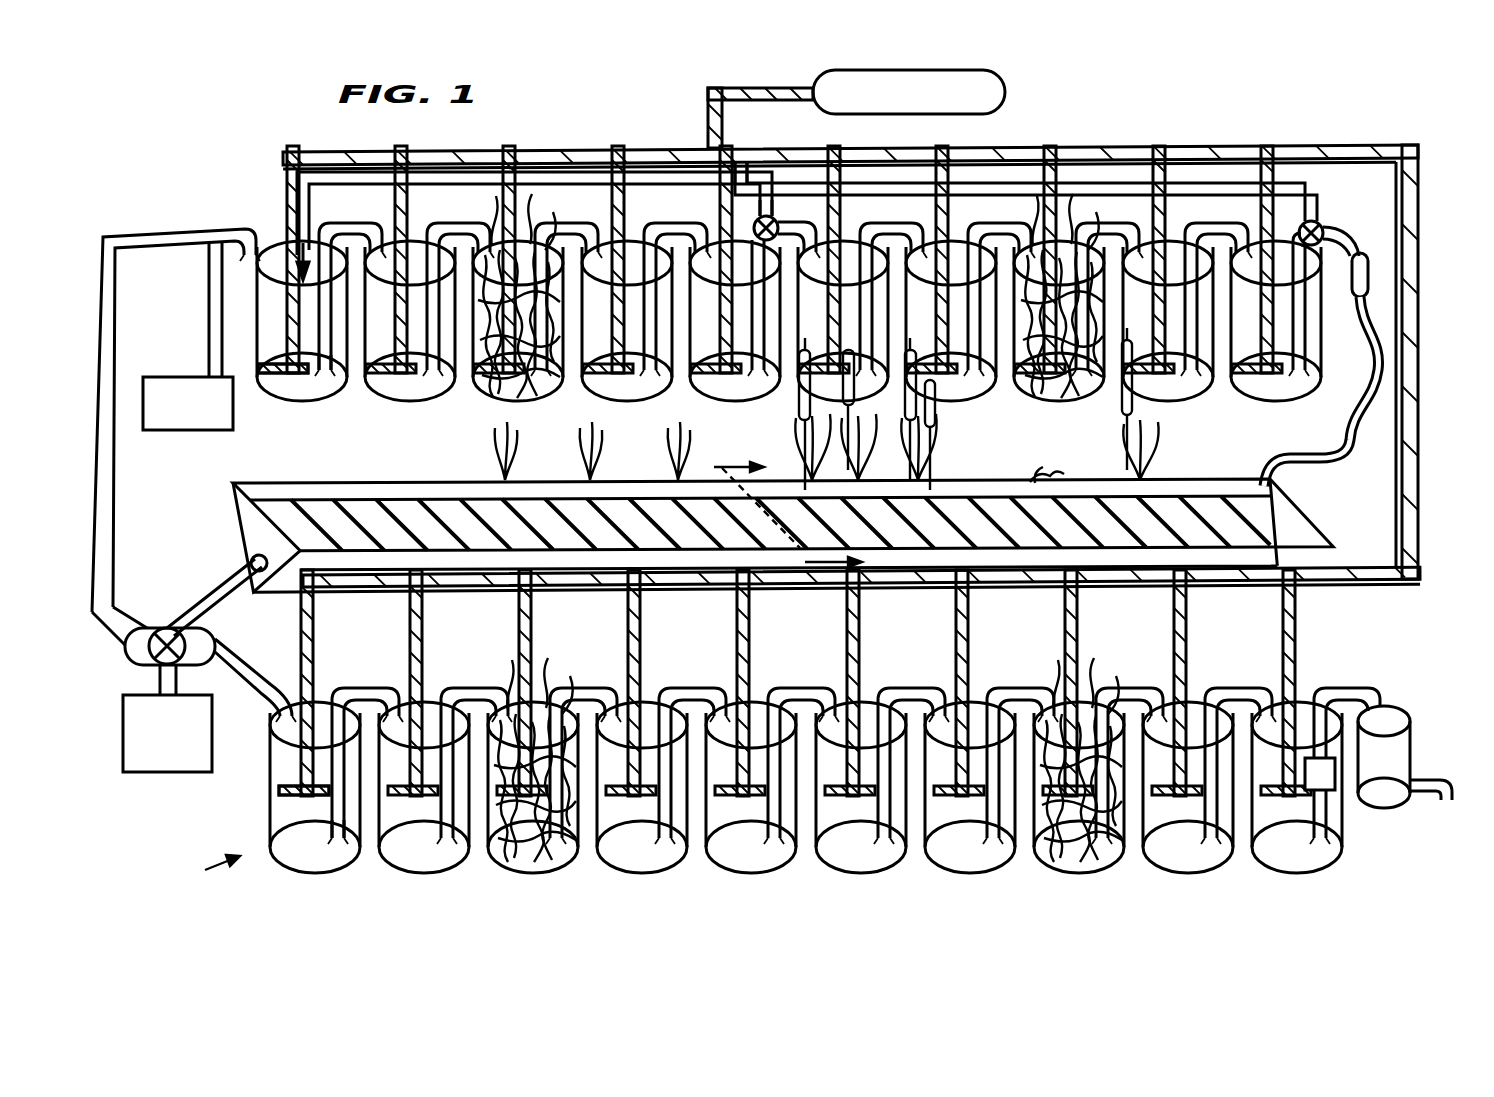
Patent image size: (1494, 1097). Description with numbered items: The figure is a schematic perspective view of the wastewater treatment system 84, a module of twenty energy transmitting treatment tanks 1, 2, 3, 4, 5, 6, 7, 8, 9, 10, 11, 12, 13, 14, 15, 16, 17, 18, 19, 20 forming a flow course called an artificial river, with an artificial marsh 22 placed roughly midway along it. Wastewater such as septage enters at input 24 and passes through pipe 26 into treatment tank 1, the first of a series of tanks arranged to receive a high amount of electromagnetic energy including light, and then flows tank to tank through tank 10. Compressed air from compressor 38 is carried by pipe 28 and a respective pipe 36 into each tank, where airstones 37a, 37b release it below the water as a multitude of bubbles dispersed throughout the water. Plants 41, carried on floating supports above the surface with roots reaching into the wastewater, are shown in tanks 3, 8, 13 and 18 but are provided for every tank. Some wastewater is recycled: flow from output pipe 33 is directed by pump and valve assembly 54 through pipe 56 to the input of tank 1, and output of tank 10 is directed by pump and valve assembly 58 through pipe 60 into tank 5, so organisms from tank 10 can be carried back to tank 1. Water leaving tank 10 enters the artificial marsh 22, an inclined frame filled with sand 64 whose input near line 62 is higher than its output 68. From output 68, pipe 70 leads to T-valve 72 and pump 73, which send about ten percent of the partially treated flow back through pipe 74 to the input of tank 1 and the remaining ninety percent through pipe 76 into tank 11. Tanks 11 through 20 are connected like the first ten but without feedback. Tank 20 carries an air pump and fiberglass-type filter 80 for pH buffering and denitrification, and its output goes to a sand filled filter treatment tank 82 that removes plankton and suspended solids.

The treatment tank 1 is at (302, 398).
The treatment tank 2 is at (412, 398).
The treatment tank 3 is at (530, 395).
The treatment tank 4 is at (632, 396).
The treatment tank 5 is at (745, 397).
The treatment tank 6 is at (852, 392).
The treatment tank 7 is at (958, 392).
The treatment tank 8 is at (1060, 390).
The treatment tank 9 is at (1178, 392).
The treatment tank 10 is at (1276, 390).
The treatment tank 11 is at (322, 864).
The treatment tank 12 is at (430, 864).
The treatment tank 13 is at (548, 860).
The treatment tank 14 is at (658, 860).
The treatment tank 15 is at (768, 858).
The treatment tank 16 is at (880, 858).
The treatment tank 17 is at (990, 855).
The treatment tank 18 is at (1100, 855).
The treatment tank 19 is at (1204, 854).
The treatment tank 20 is at (1314, 854).
The artificial marsh 22 is at (1300, 555).
The input 24 is at (150, 430).
The pipe 26 is at (258, 240).
The pipe 28 is at (1100, 150).
The output pipe 33 is at (750, 236).
The pipe 36 is at (292, 186).
The airstone 37a is at (262, 378).
The airstone 37b is at (326, 385).
The compressor 38 is at (1006, 92).
The plants 41 is at (552, 314).
The pump and valve assembly 54 is at (754, 222).
The pipe 56 is at (762, 182).
The pump and valve assembly 58 is at (1322, 228).
The pipe 60 is at (1308, 190).
The line 62 is at (1326, 458).
The sand 64 is at (360, 508).
The output 68 is at (250, 558).
The pipe 70 is at (212, 598).
The T-valve 72 is at (158, 668).
The pump 73 is at (184, 772).
The pipe 74 is at (140, 244).
The pipe 76 is at (244, 690).
The air pump and fiberglass-type filter 80 is at (1332, 792).
The sand filled filter treatment tank 82 is at (1396, 752).
The system 84 is at (204, 868).